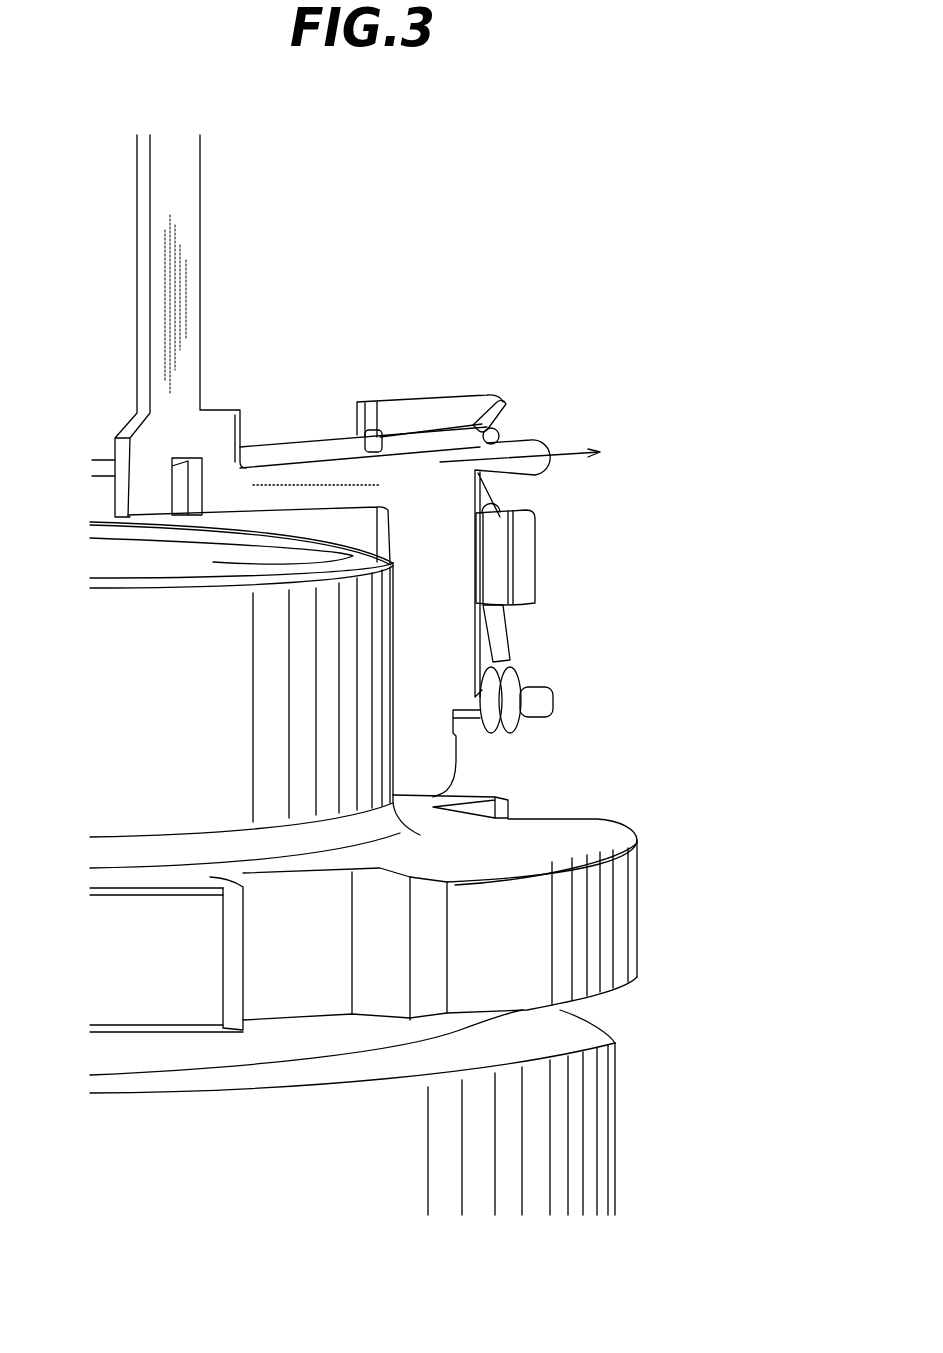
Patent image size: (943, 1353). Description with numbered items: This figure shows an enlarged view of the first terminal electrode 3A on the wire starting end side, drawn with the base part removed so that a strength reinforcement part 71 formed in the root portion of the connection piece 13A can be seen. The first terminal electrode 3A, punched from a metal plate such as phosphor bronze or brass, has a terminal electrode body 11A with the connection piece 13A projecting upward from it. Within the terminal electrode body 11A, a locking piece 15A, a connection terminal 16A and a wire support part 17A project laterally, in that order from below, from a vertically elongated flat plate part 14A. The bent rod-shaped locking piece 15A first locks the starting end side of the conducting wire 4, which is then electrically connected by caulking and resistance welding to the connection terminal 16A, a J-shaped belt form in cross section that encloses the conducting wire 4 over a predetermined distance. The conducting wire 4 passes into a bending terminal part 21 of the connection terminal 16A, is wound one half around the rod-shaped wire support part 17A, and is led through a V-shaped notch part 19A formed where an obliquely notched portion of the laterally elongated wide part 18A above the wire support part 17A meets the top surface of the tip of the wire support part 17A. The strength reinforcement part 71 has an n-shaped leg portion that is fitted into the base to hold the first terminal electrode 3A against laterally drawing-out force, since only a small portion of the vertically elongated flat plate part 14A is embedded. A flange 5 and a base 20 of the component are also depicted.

The first terminal electrode 3A is at (237, 366).
The connection piece 13A is at (195, 184).
The strength reinforcement part 71 is at (160, 480).
The terminal electrode body 11A is at (412, 398).
The wide part 18A is at (505, 402).
The V-shaped notch part 19A is at (493, 418).
The wire support part 17A is at (537, 458).
The bending terminal part 21 is at (517, 535).
The connection terminal 16A is at (533, 575).
The conducting wire 4 is at (495, 630).
The locking piece 15A is at (553, 700).
The vertically elongated flat plate part 14A is at (420, 743).
The flange 5 is at (618, 913).
The base 20 is at (588, 1152).